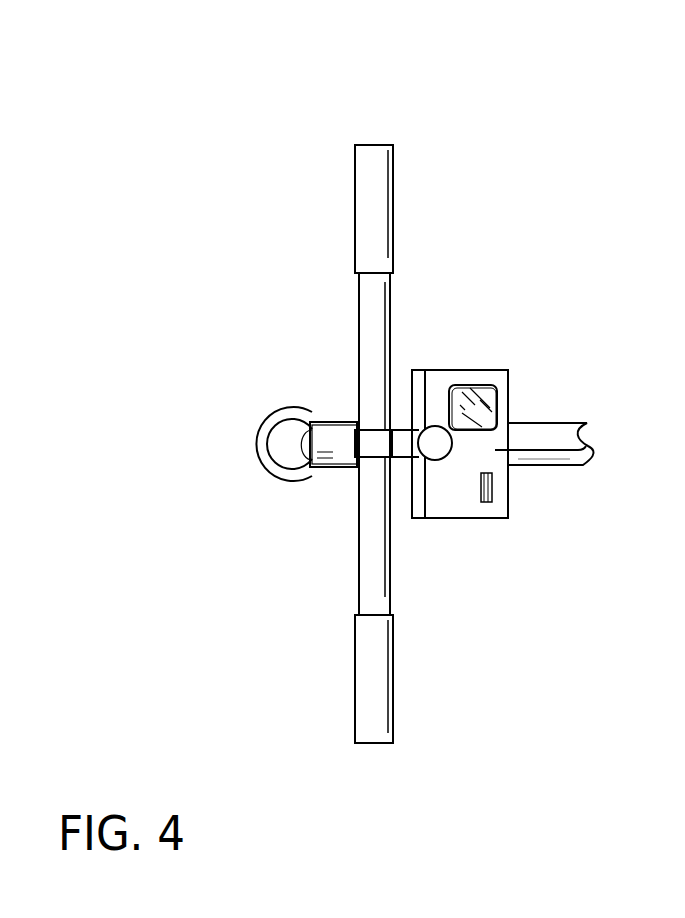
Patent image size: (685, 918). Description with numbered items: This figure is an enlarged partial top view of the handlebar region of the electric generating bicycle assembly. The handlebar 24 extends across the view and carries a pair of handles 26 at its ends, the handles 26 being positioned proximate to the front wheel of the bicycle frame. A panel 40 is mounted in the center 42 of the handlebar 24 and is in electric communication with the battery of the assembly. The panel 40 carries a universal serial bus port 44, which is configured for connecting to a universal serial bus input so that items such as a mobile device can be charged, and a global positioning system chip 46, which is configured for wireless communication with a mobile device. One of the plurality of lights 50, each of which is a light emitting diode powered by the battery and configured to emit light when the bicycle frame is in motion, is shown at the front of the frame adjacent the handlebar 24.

The handlebar 24 is at (370, 317).
The pair of handles 26 is at (370, 192).
The panel 40 is at (590, 447).
The center 42 is at (373, 444).
The universal serial bus port 44 is at (493, 492).
The global positioning system chip 46 is at (488, 397).
The plurality of lights 50 is at (305, 445).